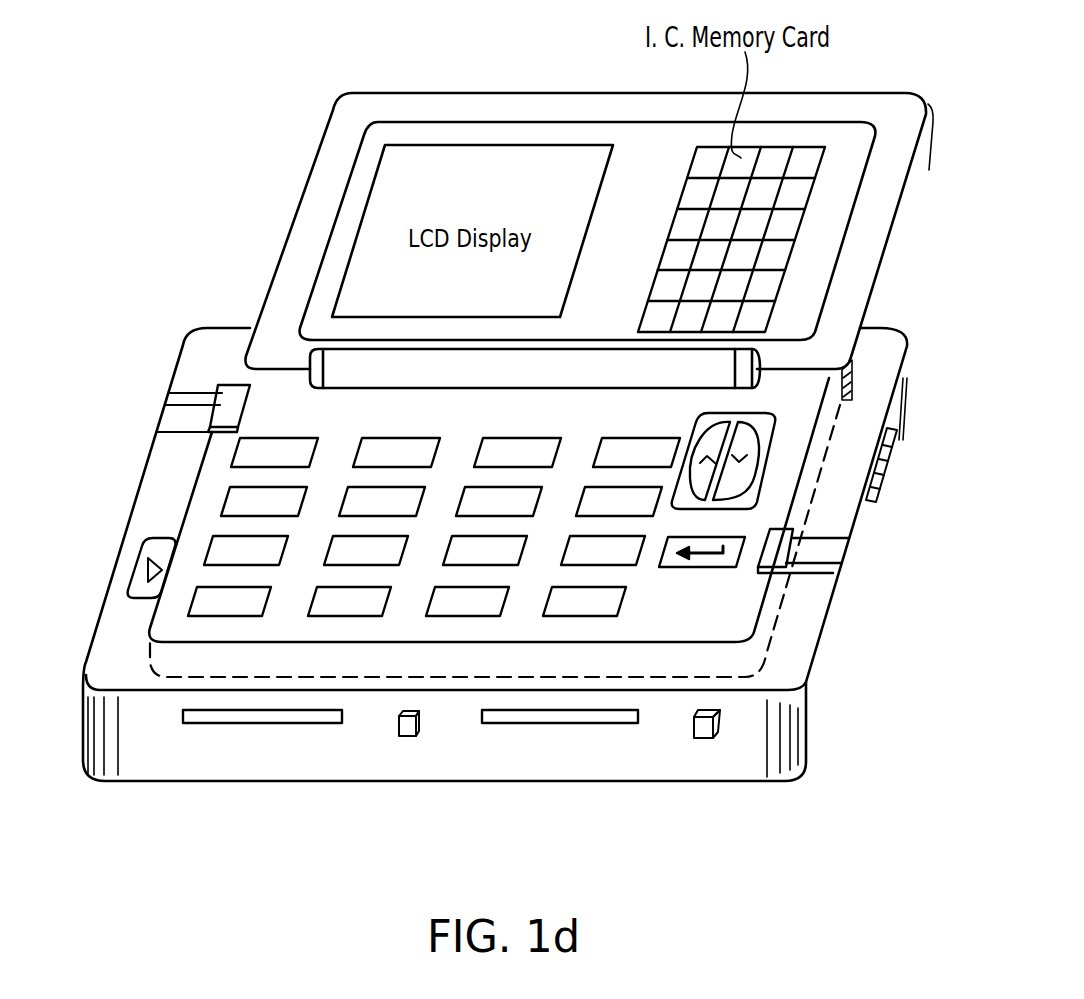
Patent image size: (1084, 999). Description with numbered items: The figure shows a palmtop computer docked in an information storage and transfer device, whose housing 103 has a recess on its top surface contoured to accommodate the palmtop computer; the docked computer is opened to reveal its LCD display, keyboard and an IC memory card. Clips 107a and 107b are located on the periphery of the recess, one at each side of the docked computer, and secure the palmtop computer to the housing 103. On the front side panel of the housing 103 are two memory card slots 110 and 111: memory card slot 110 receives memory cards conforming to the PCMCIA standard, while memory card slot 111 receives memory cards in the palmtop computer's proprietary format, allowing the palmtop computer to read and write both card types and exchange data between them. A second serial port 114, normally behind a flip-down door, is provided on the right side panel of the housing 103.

The housing 103 is at (880, 352).
The clip 107a is at (228, 402).
The clip 107b is at (797, 565).
The memory card slot 110 is at (270, 716).
The memory card slot 111 is at (565, 716).
The second serial port 114 is at (870, 497).